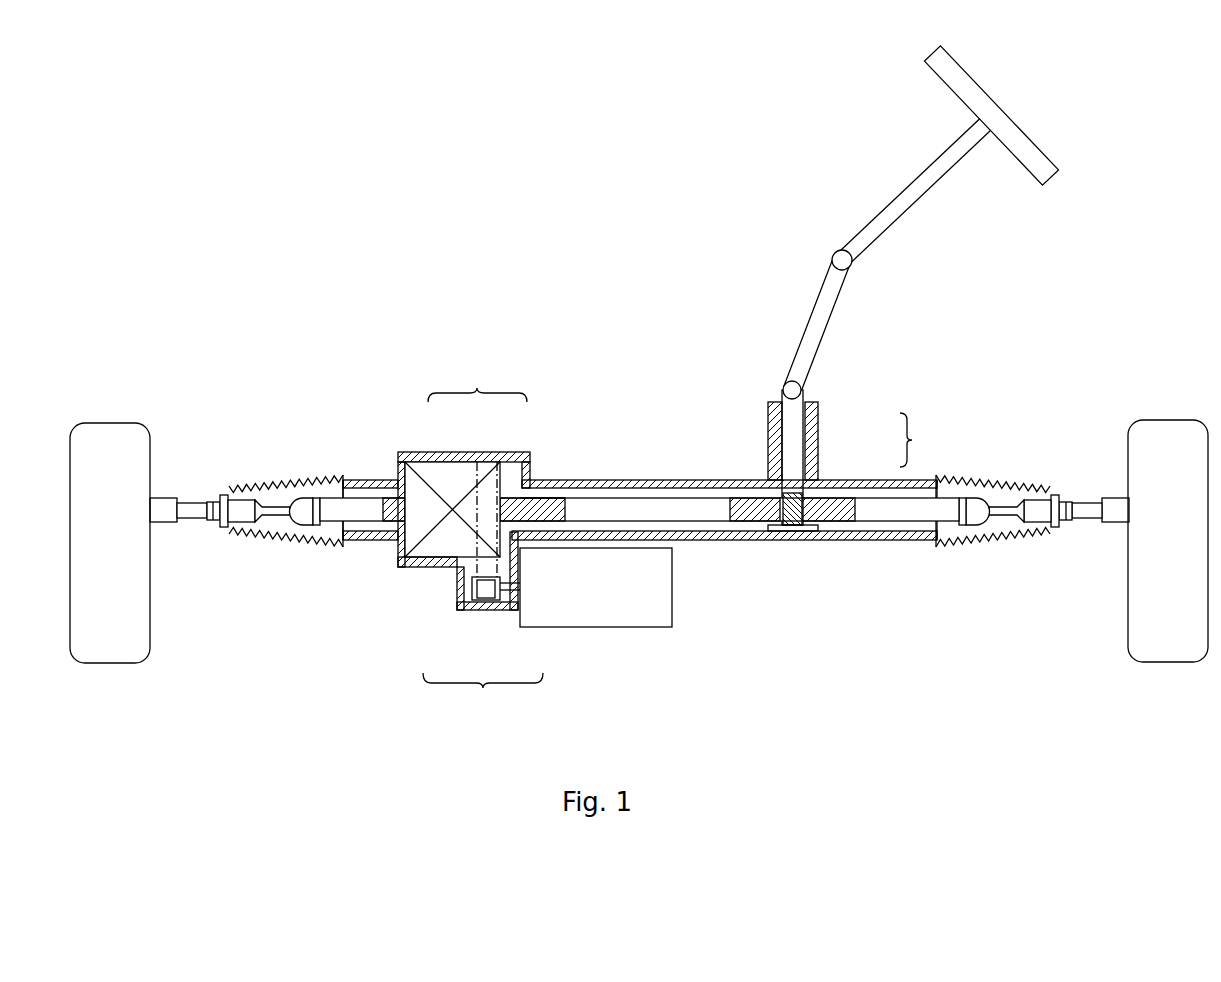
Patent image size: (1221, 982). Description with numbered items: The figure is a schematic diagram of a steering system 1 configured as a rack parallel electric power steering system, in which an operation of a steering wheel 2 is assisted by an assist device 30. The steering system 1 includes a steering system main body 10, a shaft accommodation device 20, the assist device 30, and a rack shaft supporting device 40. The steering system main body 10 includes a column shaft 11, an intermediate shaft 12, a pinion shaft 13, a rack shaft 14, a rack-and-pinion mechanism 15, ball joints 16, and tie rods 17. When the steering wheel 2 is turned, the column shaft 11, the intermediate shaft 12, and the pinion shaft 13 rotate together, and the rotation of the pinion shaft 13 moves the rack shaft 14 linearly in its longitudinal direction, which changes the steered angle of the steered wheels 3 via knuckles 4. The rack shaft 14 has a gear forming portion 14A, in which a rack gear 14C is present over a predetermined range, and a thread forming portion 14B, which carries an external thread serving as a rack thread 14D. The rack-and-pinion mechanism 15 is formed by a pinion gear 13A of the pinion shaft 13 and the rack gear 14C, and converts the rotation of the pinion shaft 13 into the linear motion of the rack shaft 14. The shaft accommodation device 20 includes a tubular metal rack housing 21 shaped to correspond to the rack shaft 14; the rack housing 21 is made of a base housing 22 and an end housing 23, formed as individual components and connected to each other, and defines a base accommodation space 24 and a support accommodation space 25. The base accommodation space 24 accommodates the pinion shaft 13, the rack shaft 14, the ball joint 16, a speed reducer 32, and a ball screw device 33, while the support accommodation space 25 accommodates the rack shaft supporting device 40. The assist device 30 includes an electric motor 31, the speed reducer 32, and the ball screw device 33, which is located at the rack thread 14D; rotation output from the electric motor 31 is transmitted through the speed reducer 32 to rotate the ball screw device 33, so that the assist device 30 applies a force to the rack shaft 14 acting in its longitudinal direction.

The steering system 1 is at (330, 112).
The steering wheel 2 is at (1017, 132).
The steered wheels 3 is at (108, 425).
The knuckles 4 is at (166, 521).
The steering system main body 10 is at (653, 363).
The column shaft 11 is at (910, 186).
The intermediate shaft 12 is at (812, 317).
The pinion shaft 13 is at (803, 441).
The pinion gear 13A is at (812, 434).
The rack shaft 14 is at (639, 507).
The gear forming portion 14A is at (730, 500).
The thread forming portion 14B is at (538, 490).
The rack gear 14C is at (832, 498).
The rack thread 14D is at (563, 510).
The rack-and-pinion mechanism 15 is at (923, 440).
The ball joints 16 is at (307, 520).
The tie rods 17 is at (233, 528).
The shaft accommodation device 20 is at (362, 427).
The rack housing 21 is at (466, 481).
The base housing 22 is at (496, 458).
The end housing 23 is at (444, 454).
The base accommodation space 24 is at (718, 527).
The support accommodation space 25 is at (775, 530).
The assist device 30 is at (535, 625).
The electric motor 31 is at (536, 615).
The speed reducer 32 is at (490, 598).
The ball screw device 33 is at (431, 560).
The rack shaft supporting device 40 is at (818, 526).